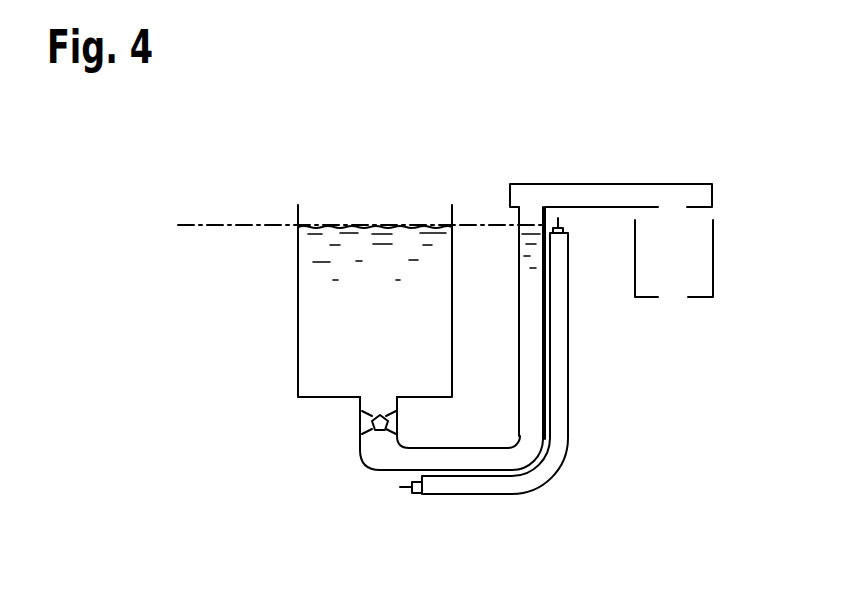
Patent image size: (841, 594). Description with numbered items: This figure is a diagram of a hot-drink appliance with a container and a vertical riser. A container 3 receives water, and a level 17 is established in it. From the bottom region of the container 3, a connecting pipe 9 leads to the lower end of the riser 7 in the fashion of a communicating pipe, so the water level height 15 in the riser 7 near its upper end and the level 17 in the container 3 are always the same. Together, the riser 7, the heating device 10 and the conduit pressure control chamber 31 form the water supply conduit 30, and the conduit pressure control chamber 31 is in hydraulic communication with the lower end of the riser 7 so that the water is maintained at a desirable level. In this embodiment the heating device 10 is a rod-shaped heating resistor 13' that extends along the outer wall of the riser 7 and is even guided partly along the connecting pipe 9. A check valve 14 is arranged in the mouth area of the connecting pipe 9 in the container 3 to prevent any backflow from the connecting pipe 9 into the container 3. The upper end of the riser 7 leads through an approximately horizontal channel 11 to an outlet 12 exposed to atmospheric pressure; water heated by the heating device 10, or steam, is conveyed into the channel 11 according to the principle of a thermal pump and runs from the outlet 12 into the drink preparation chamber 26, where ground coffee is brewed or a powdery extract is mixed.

The container 3 is at (313, 312).
The riser 7 is at (535, 404).
The connecting pipe 9 is at (457, 460).
The heating device 10 is at (553, 338).
The channel 11 is at (612, 195).
The outlet 12 is at (715, 252).
The rod-shaped heating resistor 13' is at (594, 393).
The check valve 14 is at (360, 424).
The water level height 15 is at (476, 226).
The level 17 is at (240, 226).
The drink preparation chamber 26 is at (713, 253).
The water supply conduit 30 is at (90, 263).
The conduit pressure control chamber 31 is at (233, 403).